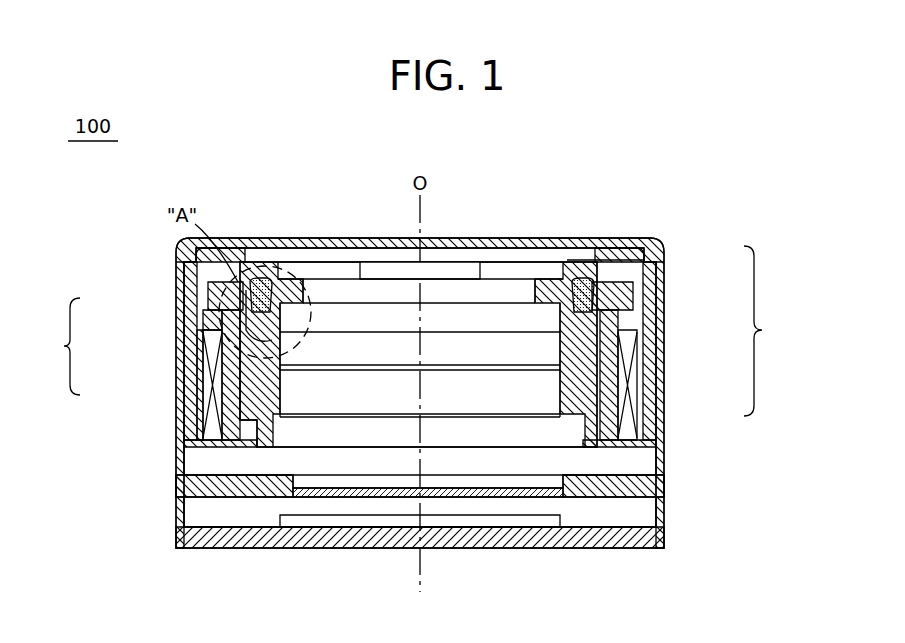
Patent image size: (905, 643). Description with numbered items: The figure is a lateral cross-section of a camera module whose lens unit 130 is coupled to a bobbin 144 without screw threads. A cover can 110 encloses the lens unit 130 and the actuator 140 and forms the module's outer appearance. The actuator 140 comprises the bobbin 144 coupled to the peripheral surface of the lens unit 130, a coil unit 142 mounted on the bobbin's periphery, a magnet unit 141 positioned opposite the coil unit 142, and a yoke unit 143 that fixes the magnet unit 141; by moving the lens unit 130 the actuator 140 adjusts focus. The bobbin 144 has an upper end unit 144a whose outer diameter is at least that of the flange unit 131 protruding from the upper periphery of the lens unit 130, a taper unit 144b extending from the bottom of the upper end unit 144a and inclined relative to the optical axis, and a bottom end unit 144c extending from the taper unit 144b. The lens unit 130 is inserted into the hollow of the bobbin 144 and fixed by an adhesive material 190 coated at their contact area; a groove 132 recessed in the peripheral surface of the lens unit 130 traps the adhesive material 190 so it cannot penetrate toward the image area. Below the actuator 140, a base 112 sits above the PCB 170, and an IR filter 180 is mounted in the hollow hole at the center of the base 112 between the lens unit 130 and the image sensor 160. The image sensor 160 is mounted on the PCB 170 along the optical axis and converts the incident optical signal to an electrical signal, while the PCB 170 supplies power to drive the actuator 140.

The cover can 110 is at (175, 268).
The base 112 is at (665, 508).
The lens unit 130 is at (300, 270).
The flange unit 131 is at (244, 288).
The groove 132 is at (256, 275).
The actuator 140 is at (778, 331).
The magnet unit 141 is at (625, 372).
The coil unit 142 is at (612, 402).
The yoke unit 143 is at (660, 322).
The bobbin 144 is at (700, 270).
The upper end unit 144a is at (207, 300).
The taper unit 144b is at (215, 352).
The bottom end unit 144c is at (205, 392).
The image sensor 160 is at (380, 528).
The PCB 170 is at (304, 538).
The IR filter 180 is at (510, 536).
The adhesive material 190 is at (573, 272).